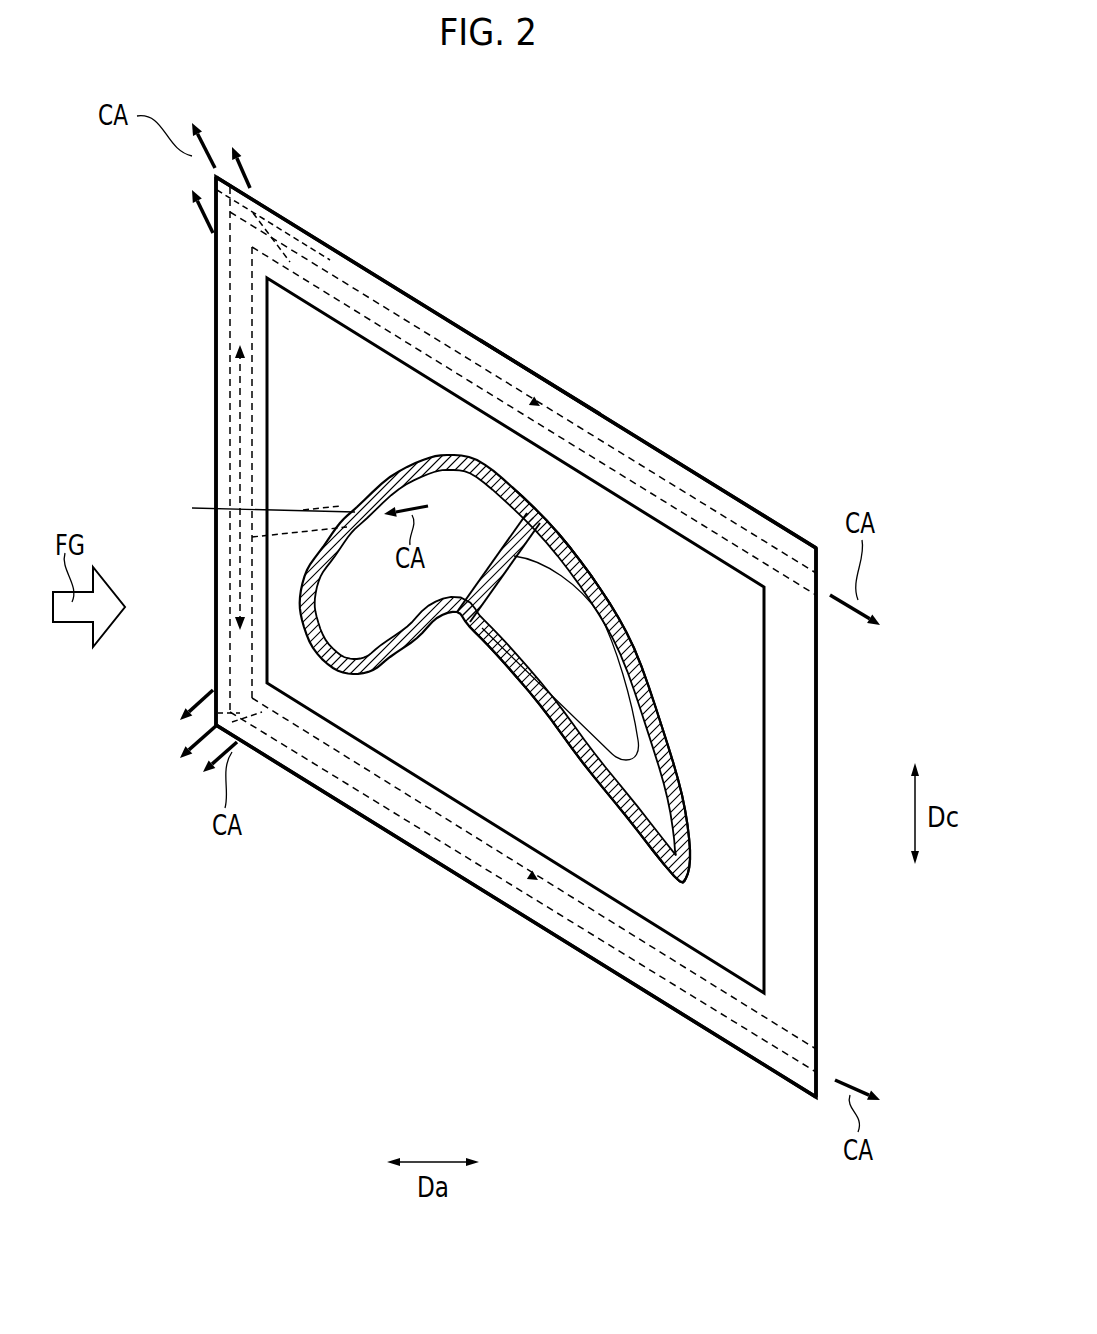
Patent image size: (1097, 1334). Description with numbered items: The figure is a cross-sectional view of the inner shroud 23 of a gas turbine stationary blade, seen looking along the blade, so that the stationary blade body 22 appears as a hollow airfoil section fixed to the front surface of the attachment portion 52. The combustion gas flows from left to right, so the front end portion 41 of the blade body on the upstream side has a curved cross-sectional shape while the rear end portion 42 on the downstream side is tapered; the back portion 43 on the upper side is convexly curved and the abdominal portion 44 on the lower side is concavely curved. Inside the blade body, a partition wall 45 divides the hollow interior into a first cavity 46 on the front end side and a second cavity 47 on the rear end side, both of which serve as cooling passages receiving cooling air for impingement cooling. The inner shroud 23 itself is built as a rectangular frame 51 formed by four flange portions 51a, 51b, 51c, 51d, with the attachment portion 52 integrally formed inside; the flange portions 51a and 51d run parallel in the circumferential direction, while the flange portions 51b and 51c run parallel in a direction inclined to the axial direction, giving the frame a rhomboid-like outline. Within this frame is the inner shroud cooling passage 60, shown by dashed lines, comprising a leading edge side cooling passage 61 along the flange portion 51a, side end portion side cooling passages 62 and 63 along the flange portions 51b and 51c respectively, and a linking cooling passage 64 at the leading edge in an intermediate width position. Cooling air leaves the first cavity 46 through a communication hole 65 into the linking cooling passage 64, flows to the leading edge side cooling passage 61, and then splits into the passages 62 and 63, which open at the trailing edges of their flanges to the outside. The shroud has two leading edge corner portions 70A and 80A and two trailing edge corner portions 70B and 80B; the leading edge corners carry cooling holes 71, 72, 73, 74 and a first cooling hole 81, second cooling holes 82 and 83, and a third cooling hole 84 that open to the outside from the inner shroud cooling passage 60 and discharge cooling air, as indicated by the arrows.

The stationary blade body 22 is at (596, 550).
The inner shroud 23 is at (537, 363).
The front end portion 41 is at (312, 634).
The rear end portion 42 is at (692, 866).
The back portion 43 is at (535, 515).
The abdominal portion 44 is at (458, 640).
The partition wall 45 is at (590, 598).
The first cavity 46 is at (455, 490).
The second cavity 47 is at (606, 725).
The frame 51 is at (800, 786).
The flange portion 51a is at (216, 437).
The flange portion 51b is at (520, 363).
The flange portion 51c is at (503, 905).
The flange portion 51d is at (817, 846).
The attachment portion 52 is at (663, 588).
The inner shroud cooling passage 60 is at (218, 325).
The leading edge side cooling passage 61 is at (256, 508).
The side end portion side cooling passage 62 is at (757, 535).
The side end portion side cooling passage 63 is at (567, 922).
The linking cooling passage 64 is at (303, 508).
The communication hole 65 is at (340, 505).
The leading edge corner portion 70A is at (217, 172).
The trailing edge corner portion 70B is at (815, 537).
The cooling hole 71 is at (137, 193).
The cooling hole 72 is at (272, 212).
The cooling hole 73 is at (218, 265).
The cooling hole 74 is at (213, 180).
The leading edge corner portion 80A is at (218, 733).
The trailing edge corner portion 80B is at (816, 1110).
The first cooling hole 81 is at (130, 766).
The second cooling hole 82 is at (255, 728).
The second cooling hole 83 is at (216, 668).
The third cooling hole 84 is at (212, 722).